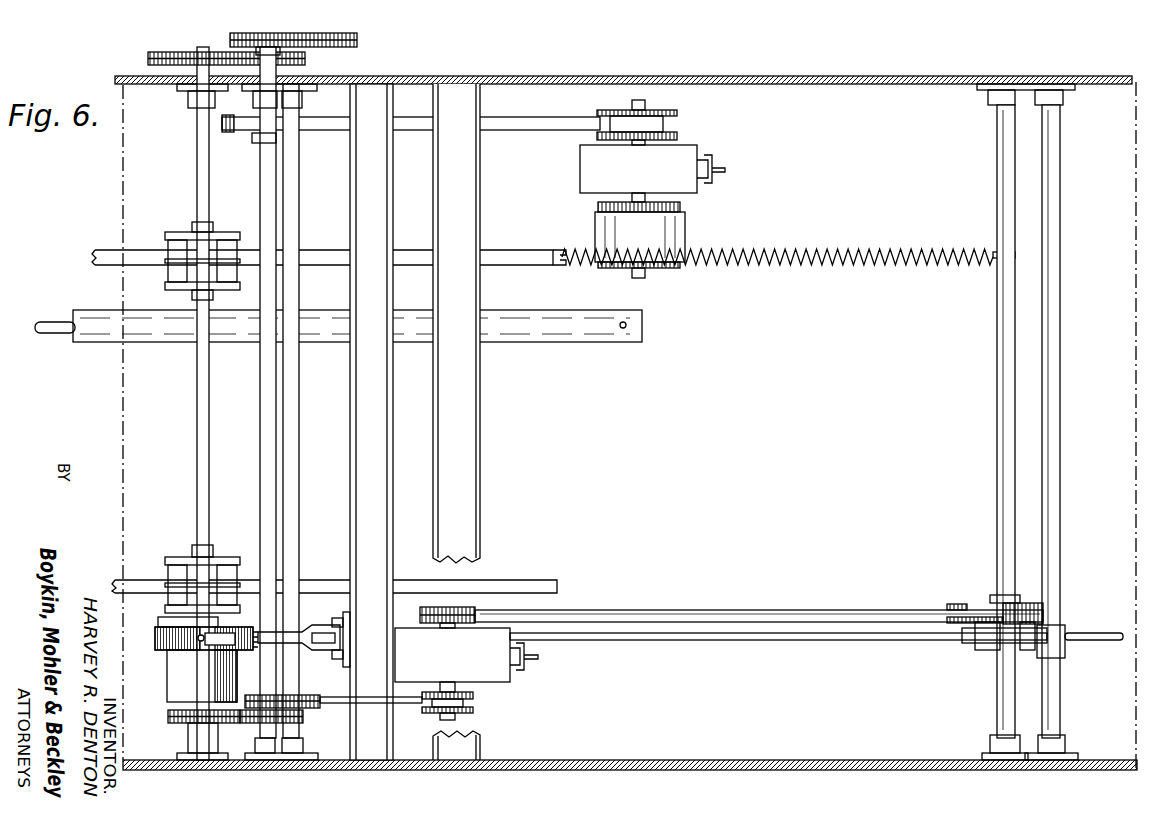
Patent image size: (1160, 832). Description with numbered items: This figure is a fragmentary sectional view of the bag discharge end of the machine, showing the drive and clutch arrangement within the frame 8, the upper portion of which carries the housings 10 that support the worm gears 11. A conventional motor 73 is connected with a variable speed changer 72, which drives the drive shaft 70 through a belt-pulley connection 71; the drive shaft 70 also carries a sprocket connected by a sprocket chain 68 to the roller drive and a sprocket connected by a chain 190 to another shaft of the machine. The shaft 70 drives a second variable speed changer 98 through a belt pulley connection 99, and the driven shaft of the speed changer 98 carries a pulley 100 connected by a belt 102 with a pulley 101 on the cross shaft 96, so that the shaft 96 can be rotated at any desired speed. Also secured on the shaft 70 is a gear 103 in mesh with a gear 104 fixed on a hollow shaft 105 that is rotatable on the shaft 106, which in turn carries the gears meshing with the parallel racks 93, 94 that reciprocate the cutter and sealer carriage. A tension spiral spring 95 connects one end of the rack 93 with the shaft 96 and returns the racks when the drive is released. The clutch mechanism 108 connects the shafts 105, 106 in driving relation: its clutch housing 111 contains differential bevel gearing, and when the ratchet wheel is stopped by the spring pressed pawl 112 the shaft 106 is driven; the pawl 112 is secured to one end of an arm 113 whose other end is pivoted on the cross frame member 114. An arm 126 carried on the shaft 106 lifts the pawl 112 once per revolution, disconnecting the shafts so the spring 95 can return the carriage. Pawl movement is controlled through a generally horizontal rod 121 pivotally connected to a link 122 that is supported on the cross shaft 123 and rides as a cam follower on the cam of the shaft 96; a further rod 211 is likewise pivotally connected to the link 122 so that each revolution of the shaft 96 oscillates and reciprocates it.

The frame 8 is at (826, 77).
The housing 10 is at (147, 740).
The worm gear 11 is at (35, 304).
The sprocket chain 68 is at (193, 52).
The drive shaft 70 is at (278, 73).
The belt-pulley connection 71 is at (335, 128).
The variable speed changer 72 is at (690, 153).
The motor 73 is at (690, 234).
The rack 93 is at (512, 254).
The rack 94 is at (515, 582).
The tension spiral spring 95 is at (790, 247).
The shaft 96 is at (1000, 326).
The variable speed changer 98 is at (498, 682).
The belt pulley connection 99 is at (285, 700).
The pulley 100 is at (470, 608).
The pulley 101 is at (968, 607).
The belt 102 is at (855, 611).
The gear 103 is at (304, 716).
The gear 104 is at (172, 716).
The hollow shaft 105 is at (196, 736).
The shaft 106 is at (200, 496).
The clutch mechanism 108 is at (174, 654).
The clutch housing 111 is at (176, 677).
The pawl 112 is at (201, 645).
The arm 113 is at (290, 637).
The cross frame member 114 is at (387, 572).
The rod 121 is at (641, 640).
The link 122 is at (990, 646).
The cross shaft 123 is at (1060, 541).
The arm 126 is at (155, 628).
The chain 190 is at (352, 46).
The rod 211 is at (1094, 633).